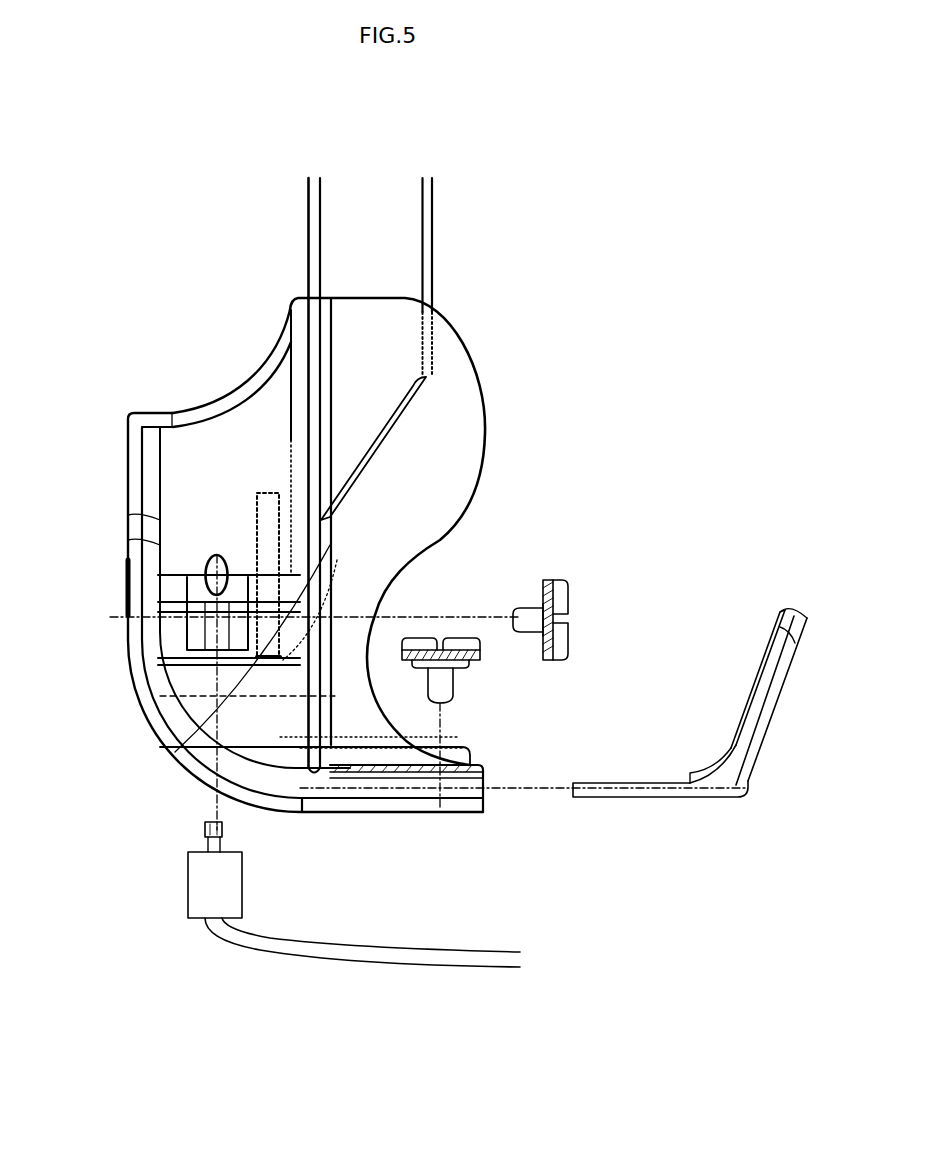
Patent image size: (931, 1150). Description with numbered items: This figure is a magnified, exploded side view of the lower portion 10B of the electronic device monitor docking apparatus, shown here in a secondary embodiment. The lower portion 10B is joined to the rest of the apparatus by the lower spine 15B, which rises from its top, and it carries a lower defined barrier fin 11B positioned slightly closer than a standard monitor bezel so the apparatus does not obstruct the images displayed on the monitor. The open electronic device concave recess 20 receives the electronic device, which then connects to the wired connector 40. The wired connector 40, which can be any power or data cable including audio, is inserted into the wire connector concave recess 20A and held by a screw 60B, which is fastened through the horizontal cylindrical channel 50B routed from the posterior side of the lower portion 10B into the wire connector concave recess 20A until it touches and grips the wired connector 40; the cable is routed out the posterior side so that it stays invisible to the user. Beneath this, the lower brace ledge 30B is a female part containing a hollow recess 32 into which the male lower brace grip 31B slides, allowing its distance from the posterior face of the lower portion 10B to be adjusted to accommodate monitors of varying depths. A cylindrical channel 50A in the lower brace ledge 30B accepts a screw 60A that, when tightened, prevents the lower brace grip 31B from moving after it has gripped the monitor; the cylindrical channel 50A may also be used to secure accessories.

The lower portion 10B is at (305, 210).
The lower spine 15B is at (380, 231).
The electronic device concave recess 20 is at (220, 448).
The lower defined barrier fin 11B is at (441, 440).
The wire connector concave recess 20A is at (197, 628).
The horizontal cylindrical channel 50B is at (262, 657).
The screw 60A is at (437, 677).
The screw 60B is at (533, 612).
The lower brace ledge 30B is at (360, 815).
The hollow recess 32 is at (458, 791).
The lower brace grip 31B is at (762, 672).
The wired connector 40 is at (208, 880).
The cylindrical channel 50A is at (440, 817).